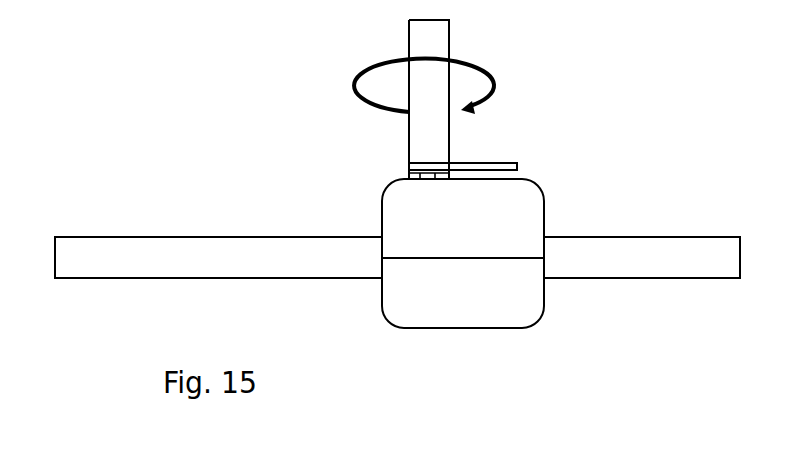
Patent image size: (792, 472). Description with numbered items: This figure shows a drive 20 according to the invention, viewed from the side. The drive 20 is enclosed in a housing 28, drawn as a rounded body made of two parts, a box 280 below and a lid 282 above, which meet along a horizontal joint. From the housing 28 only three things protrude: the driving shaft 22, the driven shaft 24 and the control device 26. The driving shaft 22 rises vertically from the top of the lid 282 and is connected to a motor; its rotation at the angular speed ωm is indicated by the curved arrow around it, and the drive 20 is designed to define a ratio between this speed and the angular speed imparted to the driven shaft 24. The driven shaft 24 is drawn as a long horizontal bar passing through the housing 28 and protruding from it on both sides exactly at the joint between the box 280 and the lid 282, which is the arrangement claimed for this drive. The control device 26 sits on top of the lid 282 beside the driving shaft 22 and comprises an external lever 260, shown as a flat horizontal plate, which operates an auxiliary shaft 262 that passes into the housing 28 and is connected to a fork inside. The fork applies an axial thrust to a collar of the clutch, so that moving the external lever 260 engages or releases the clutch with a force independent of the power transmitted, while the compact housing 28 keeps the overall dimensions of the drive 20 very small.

The drive 20 is at (230, 125).
The driving shaft 22 is at (442, 37).
The driven shaft 24 is at (173, 253).
The control device 26 is at (441, 152).
The housing 28 is at (437, 330).
The external lever 260 is at (507, 166).
The auxiliary shaft 262 is at (408, 177).
The box 280 is at (519, 307).
The lid 282 is at (527, 200).